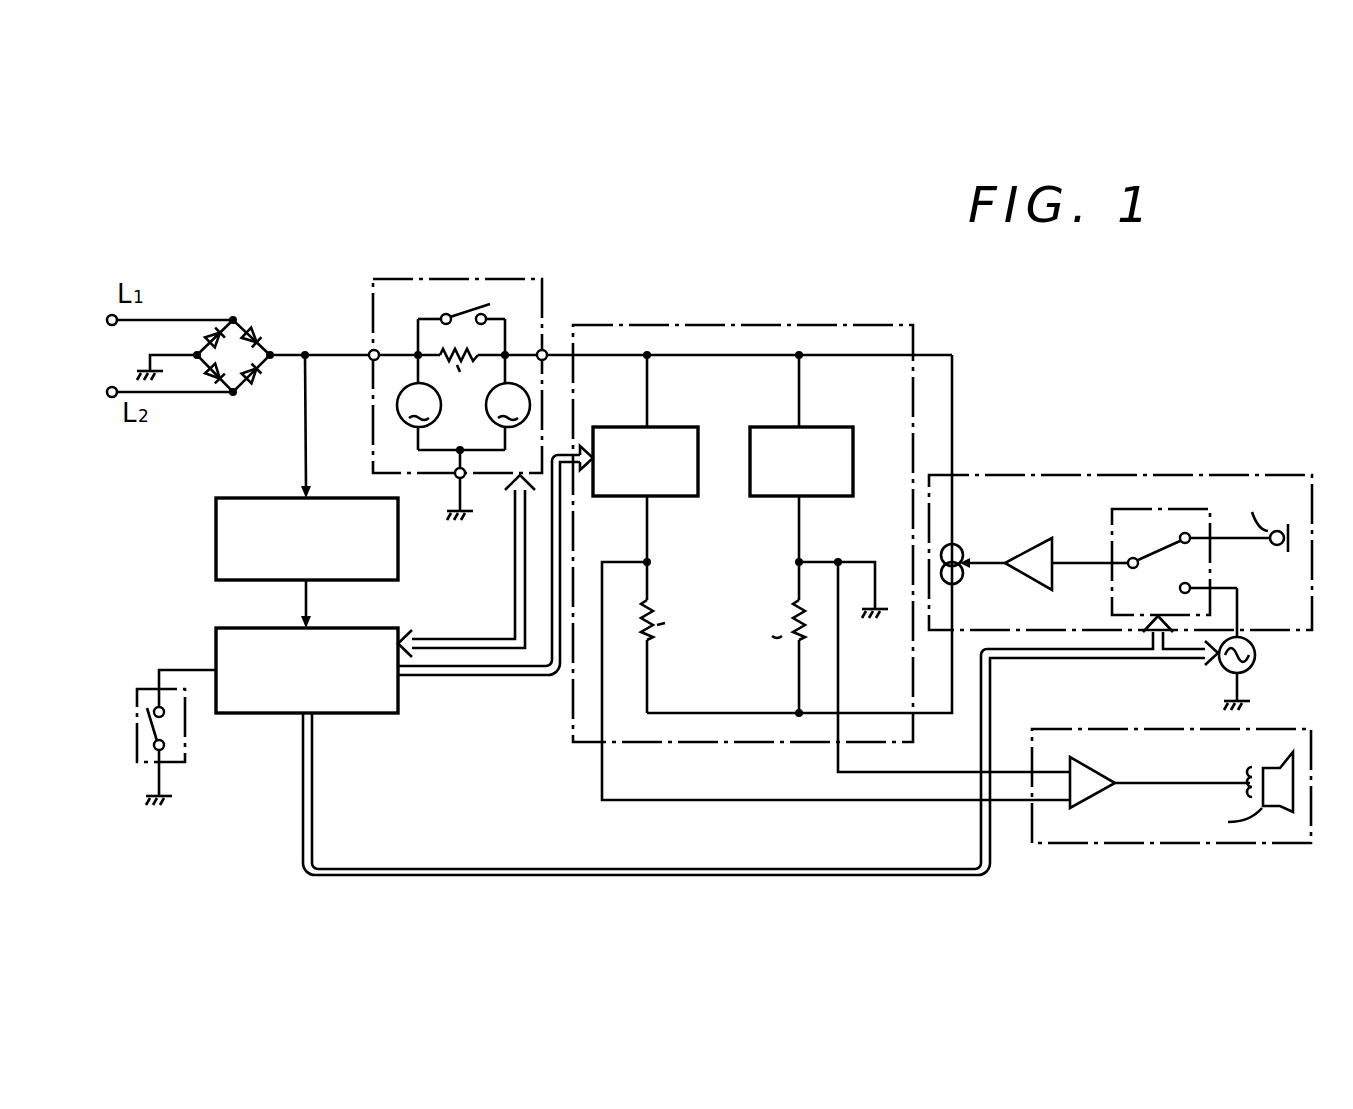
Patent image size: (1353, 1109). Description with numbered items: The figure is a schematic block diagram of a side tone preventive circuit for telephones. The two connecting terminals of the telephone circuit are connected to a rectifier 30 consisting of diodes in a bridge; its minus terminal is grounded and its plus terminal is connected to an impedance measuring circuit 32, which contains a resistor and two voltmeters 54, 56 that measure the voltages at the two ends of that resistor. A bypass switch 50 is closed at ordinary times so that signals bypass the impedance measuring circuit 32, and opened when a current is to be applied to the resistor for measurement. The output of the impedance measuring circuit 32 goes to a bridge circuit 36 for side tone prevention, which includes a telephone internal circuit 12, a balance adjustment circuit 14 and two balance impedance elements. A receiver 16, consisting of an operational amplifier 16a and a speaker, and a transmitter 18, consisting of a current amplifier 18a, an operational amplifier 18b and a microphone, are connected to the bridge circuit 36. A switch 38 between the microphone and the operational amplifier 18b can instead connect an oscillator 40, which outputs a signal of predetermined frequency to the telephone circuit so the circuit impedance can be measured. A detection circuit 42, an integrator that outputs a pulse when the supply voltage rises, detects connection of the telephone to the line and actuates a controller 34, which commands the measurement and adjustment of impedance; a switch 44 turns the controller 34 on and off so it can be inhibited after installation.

The rectifier 30 is at (258, 334).
The impedance measuring circuit 32 is at (458, 374).
The switch 50 is at (454, 312).
The voltmeter 54 is at (492, 421).
The voltmeter 56 is at (406, 422).
The bridge circuit 36 is at (821, 534).
The balance adjustment circuit 14 is at (676, 427).
The telephone internal circuit 12 is at (830, 427).
The detection circuit 42 is at (262, 498).
The controller 34 is at (390, 628).
The switch 44 is at (186, 705).
The transmitter 18 is at (1120, 523).
The current amplifier 18a is at (961, 545).
The operational amplifier 18b is at (1030, 545).
The switch 38 is at (1150, 509).
The oscillator 40 is at (1257, 659).
The receiver 16 is at (1171, 758).
The operational amplifier 16a is at (1114, 788).